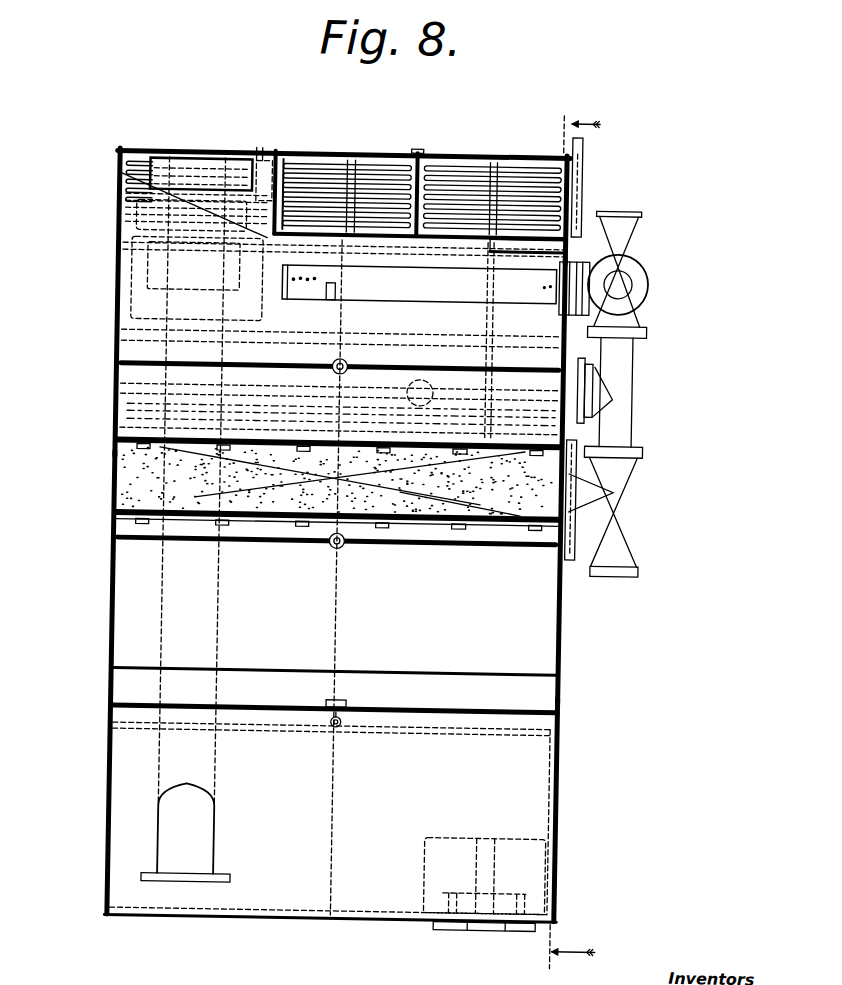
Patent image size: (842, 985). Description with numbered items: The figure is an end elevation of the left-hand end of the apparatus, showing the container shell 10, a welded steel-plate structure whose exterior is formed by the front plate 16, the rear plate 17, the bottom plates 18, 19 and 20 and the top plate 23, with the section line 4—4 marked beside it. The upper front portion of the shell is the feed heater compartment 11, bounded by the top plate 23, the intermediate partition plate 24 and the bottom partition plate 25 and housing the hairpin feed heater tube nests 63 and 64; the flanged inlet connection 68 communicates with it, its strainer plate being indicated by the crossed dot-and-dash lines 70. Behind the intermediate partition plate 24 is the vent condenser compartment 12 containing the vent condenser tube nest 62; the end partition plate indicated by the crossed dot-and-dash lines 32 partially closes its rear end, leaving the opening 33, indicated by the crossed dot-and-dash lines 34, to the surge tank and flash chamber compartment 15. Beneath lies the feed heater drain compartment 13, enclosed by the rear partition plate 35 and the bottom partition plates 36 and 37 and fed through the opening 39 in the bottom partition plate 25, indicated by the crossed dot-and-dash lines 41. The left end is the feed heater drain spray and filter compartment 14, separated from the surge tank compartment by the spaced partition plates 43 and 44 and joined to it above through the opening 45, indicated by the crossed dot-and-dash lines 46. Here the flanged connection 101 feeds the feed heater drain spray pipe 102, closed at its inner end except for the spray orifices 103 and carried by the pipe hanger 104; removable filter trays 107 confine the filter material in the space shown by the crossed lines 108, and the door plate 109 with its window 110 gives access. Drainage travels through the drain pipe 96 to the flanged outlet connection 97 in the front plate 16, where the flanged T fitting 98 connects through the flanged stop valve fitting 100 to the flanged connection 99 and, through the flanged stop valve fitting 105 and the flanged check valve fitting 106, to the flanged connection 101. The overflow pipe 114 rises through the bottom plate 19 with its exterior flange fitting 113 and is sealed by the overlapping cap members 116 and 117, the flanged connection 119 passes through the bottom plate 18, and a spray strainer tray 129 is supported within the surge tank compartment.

The section line 4 is at (575, 540).
The container shell 10 is at (115, 382).
The feed heater compartment 11 is at (410, 157).
The vent condenser compartment 12 is at (141, 168).
The feed heater drain compartment 13 is at (485, 246).
The feed heater drain spray and filter compartment 14 is at (542, 618).
The surge tank and flash chamber compartment 15 is at (161, 161).
The front plate 16 is at (557, 663).
The rear plate 17 is at (113, 576).
The bottom plate 18 is at (322, 921).
The bottom plate 19 is at (545, 796).
The bottom plate 20 is at (498, 719).
The top plate 23 is at (192, 160).
The intermediate partition plate 24 is at (279, 166).
The bottom partition plate 25 is at (328, 240).
The crossed dot-and-dash lines 32 is at (152, 236).
The opening 33 is at (267, 154).
The crossed dot-and-dash lines 34 is at (211, 172).
The rear partition plate 35 is at (486, 264).
The bottom partition plate 36 is at (549, 288).
The bottom partition plate 37 is at (605, 428).
The opening 39 is at (558, 233).
The crossed dot-and-dash lines 41 is at (555, 242).
The partition plate 43 is at (124, 644).
The partition plate 44 is at (125, 686).
The opening 45 is at (116, 168).
The crossed dot-and-dash lines 46 is at (117, 190).
The vent condenser tube nest 62 is at (261, 161).
The feed heater tube nest 63 is at (363, 197).
The feed heater tube nest 64 is at (460, 191).
The flanged inlet connection 68 is at (576, 148).
The crossed dot-and-dash lines 70 is at (573, 158).
The drain pipe 96 is at (403, 386).
The flanged outlet connection 97 is at (590, 390).
The flanged T fitting 98 is at (625, 403).
The flanged connection 99 is at (605, 507).
The flanged stop valve fitting 100 is at (624, 475).
The flanged connection 101 is at (556, 283).
The feed heater drain spray pipe 102 is at (469, 293).
The spray orifices 103 is at (313, 281).
The pipe hanger 104 is at (334, 300).
The flanged stop valve fitting 105 is at (623, 252).
The flanged check valve fitting 106 is at (631, 283).
The removable filter trays 107 is at (336, 548).
The crossed lines 108 is at (417, 446).
The door plate 109 is at (572, 559).
The window 110 is at (592, 362).
The exterior flange fitting 113 is at (206, 884).
The overflow pipe 114 is at (173, 848).
The cap member 116 is at (129, 284).
The cap member 117 is at (115, 271).
The flanged connection 119 is at (467, 920).
The spray strainer tray 129 is at (315, 367).